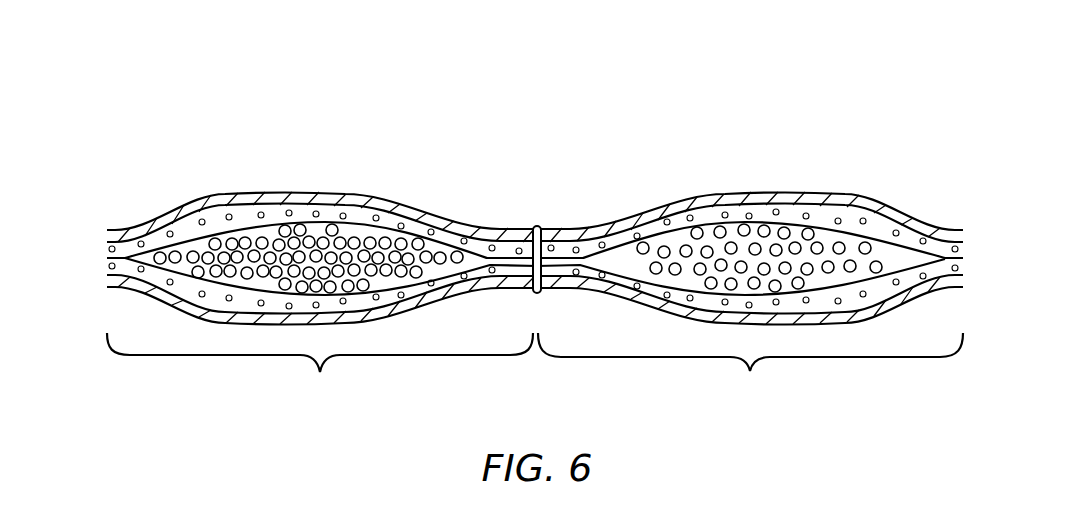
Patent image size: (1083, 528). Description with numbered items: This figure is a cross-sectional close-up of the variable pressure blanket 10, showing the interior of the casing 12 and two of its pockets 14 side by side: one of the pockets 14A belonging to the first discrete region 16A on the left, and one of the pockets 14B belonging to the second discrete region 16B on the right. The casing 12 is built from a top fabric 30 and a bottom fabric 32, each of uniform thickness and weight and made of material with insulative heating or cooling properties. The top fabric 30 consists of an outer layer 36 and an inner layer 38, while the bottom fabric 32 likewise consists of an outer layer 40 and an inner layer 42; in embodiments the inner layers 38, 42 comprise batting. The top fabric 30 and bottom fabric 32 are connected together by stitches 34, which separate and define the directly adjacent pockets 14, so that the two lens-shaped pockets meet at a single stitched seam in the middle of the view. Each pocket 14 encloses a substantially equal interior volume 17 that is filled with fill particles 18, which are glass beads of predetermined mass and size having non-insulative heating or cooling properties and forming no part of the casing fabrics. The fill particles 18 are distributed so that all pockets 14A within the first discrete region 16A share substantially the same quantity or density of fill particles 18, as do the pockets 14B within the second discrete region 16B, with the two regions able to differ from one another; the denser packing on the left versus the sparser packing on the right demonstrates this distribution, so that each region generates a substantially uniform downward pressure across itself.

The variable pressure blanket 10 is at (572, 125).
The casing 12 is at (555, 188).
The pockets 14 is at (535, 225).
The pockets of the first discrete region 14A is at (299, 222).
The pockets of the second discrete region 14B is at (790, 225).
The first discrete region 16A is at (320, 366).
The second discrete region 16B is at (750, 366).
The interior volume 17 is at (678, 258).
The fill particles 18 is at (345, 225).
The top fabric 30 is at (535, 188).
The bottom fabric 32 is at (535, 307).
The stitches 34 is at (536, 226).
The outer layer of the top fabric 36 is at (163, 225).
The inner layer of the top fabric 38 is at (122, 247).
The outer layer of the bottom fabric 40 is at (163, 292).
The inner layer of the bottom fabric 42 is at (125, 271).